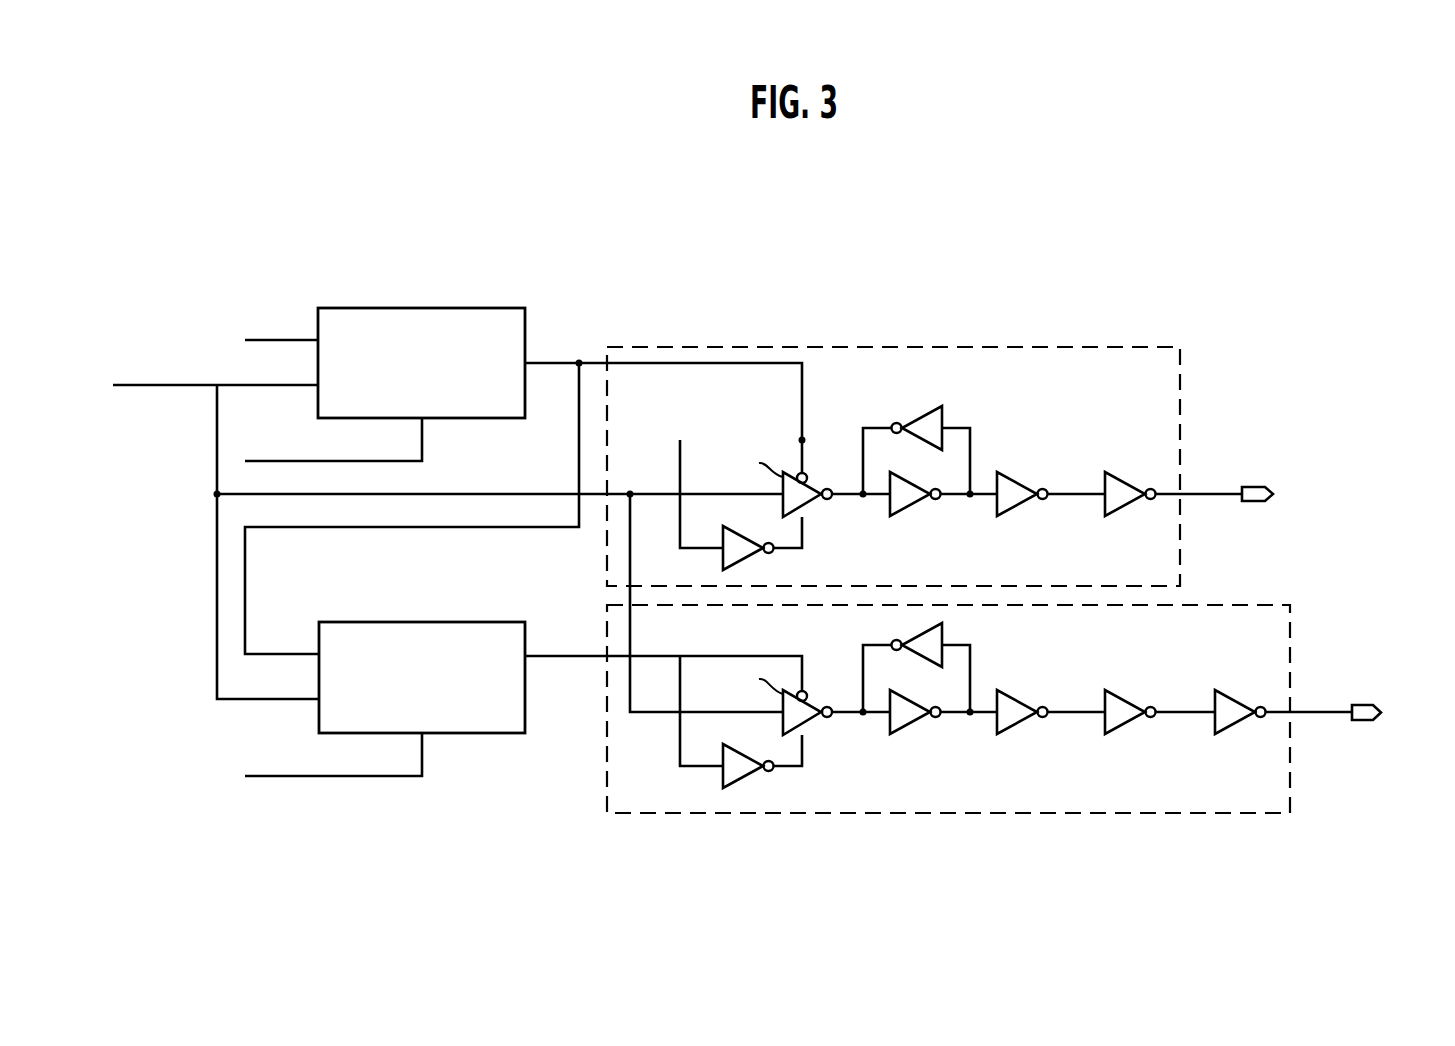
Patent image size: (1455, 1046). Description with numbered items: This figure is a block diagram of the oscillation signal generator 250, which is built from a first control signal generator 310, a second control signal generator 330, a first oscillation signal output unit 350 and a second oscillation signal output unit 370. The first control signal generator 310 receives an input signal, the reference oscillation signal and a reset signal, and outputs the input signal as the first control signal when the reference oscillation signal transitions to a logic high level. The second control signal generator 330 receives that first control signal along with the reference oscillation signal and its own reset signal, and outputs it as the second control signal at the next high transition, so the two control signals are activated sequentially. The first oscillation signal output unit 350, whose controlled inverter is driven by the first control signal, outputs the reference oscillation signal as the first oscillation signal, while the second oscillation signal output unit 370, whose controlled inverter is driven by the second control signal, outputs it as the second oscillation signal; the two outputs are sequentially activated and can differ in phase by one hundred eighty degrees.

The oscillation signal generator 250 is at (1185, 243).
The first control signal generator 310 is at (468, 308).
The second control signal generator 330 is at (468, 622).
The first oscillation signal output unit 350 is at (1122, 347).
The second oscillation signal output unit 370 is at (1230, 605).